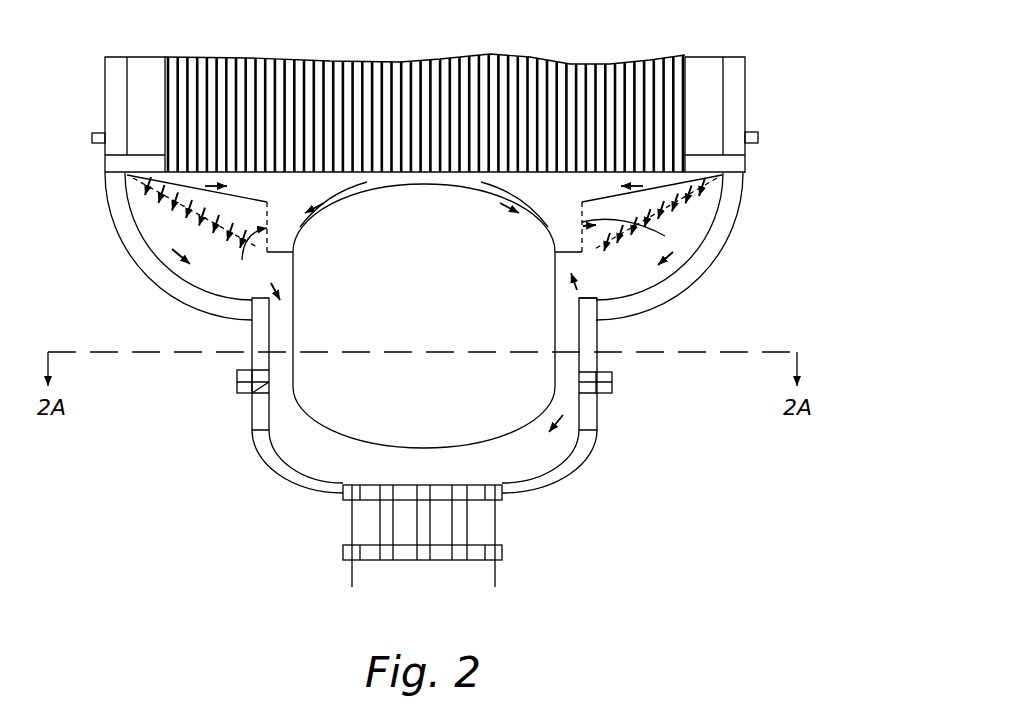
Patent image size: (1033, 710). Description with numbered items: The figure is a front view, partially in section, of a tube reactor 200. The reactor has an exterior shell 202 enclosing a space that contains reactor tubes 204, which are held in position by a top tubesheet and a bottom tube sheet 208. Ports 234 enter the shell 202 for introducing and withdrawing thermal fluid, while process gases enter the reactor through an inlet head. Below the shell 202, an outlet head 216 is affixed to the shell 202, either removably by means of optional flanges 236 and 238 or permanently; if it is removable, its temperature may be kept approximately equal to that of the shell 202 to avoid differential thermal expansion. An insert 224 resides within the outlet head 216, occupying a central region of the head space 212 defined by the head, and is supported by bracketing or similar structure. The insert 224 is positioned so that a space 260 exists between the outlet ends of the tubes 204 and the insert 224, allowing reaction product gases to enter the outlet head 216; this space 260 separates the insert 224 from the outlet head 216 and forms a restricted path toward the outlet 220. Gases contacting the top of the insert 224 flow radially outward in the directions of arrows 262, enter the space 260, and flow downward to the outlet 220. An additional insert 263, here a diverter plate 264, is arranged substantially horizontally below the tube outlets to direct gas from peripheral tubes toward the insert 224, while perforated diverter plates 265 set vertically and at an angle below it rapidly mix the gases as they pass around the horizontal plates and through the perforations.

The tube reactor 200 is at (797, 62).
The exterior shell 202 is at (745, 110).
The reactor tubes 204 is at (527, 72).
The bottom tube sheet 208 is at (746, 163).
The head space 212 is at (607, 280).
The outlet head 216 is at (214, 498).
The outlet 220 is at (422, 541).
The insert 224 is at (424, 316).
The ports 234 is at (92, 138).
The flange 236 is at (237, 392).
The flange 238 is at (237, 372).
The space 260 is at (268, 253).
The arrows 262 is at (424, 302).
The additional insert 263 is at (148, 222).
The diverter plate 264 is at (196, 188).
The diverter plates 265 is at (178, 208).